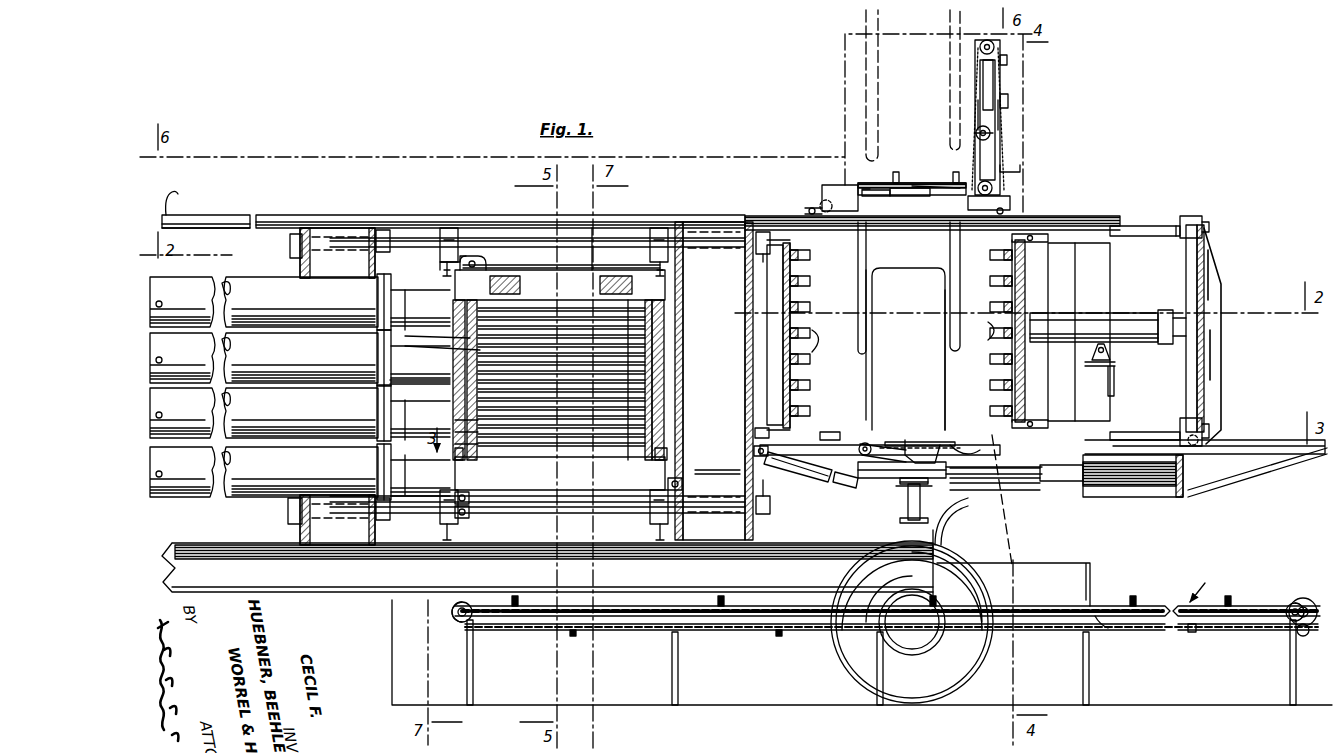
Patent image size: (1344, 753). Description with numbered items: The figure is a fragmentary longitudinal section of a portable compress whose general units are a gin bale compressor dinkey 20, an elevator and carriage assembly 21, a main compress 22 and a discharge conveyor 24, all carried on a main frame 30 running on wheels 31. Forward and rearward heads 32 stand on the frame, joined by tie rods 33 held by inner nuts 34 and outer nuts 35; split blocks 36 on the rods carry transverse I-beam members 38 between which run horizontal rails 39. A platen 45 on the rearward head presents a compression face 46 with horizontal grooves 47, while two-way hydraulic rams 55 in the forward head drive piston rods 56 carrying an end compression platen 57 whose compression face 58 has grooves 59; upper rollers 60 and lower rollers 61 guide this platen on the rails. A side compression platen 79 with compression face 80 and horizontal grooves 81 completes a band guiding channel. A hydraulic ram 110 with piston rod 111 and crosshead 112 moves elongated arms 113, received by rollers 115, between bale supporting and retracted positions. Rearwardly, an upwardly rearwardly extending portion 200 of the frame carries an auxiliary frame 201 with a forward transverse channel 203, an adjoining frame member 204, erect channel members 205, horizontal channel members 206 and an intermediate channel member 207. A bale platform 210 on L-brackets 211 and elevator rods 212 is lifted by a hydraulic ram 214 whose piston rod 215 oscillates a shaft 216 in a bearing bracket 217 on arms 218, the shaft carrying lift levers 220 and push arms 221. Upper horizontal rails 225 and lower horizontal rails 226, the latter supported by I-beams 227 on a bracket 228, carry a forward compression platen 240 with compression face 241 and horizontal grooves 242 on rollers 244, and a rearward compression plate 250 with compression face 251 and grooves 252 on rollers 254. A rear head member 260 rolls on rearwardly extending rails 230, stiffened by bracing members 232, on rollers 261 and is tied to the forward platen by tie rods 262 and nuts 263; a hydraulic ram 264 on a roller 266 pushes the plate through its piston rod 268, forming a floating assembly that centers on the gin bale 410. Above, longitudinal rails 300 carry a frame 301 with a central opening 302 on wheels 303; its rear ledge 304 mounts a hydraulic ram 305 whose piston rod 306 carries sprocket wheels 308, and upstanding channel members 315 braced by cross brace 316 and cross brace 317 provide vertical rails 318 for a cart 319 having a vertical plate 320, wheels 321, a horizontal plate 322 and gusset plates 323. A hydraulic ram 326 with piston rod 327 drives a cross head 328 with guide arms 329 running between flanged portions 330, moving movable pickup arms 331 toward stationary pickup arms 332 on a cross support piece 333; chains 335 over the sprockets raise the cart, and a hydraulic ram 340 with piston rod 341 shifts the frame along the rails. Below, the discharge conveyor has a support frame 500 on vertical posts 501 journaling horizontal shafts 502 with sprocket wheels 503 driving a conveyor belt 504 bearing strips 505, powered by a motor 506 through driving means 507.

The gin bale compressor dinkey 20 is at (1063, 212).
The elevator and carriage assembly 21 is at (1025, 90).
The main compress 22 is at (688, 182).
The discharge conveyor 24 is at (1216, 573).
The main frame 30 is at (322, 570).
The wheels 31 is at (932, 668).
The heads 32 is at (343, 256).
The tie rods 33 is at (412, 238).
The inner nuts 34 is at (383, 232).
The outer nuts 35 is at (295, 236).
The split blocks 36 is at (446, 230).
The I-beam members 38 is at (444, 269).
The horizontal rails 39 is at (542, 275).
The platen 45 is at (662, 350).
The compression face 46 is at (632, 320).
The horizontal grooves 47 is at (652, 384).
The two-way hydraulic rams 55 is at (300, 387).
The piston rods 56 is at (410, 300).
The end compression platen 57 is at (447, 380).
The compression face 58 is at (480, 306).
The horizontal grooves 59 is at (475, 444).
The upper rollers 60 is at (462, 262).
The lower rollers 61 is at (470, 506).
The side compression platen 79 is at (580, 298).
The compression face 80 is at (470, 333).
The horizontal grooves 81 is at (480, 356).
The hydraulic ram 110 is at (920, 463).
The piston rod 111 is at (1045, 495).
The crosshead 112 is at (1080, 472).
The elongated arms 113 is at (720, 470).
The rollers 115 is at (680, 487).
The upwardly rearwardly extending portion 200 is at (940, 547).
The auxiliary frame 201 is at (1160, 492).
The forward transverse channel 203 is at (925, 486).
The plate 204 is at (1190, 478).
The erect channel members 205 is at (1110, 273).
The horizontal channel members 206 is at (1160, 228).
The intermediate channel member 207 is at (1108, 376).
The bale platform 210 is at (930, 442).
The L-brackets 211 is at (960, 445).
The elevator rods 212 is at (940, 506).
The hydraulic ram 214 is at (822, 475).
The piston rod 215 is at (842, 485).
The shaft 216 is at (862, 444).
The bearing bracket 217 is at (845, 440).
The arms 218 is at (862, 480).
The lift levers 220 is at (906, 497).
The push arms 221 is at (925, 445).
The upper horizontal rails 225 is at (908, 338).
The lower horizontal rails 226 is at (1003, 445).
The I-beams 227 is at (755, 416).
The bracket 228 is at (822, 432).
The rearwardly extending rails 230 is at (1255, 446).
The bracing members 232 is at (1270, 470).
The forward compression platen 240 is at (768, 290).
The compression face 241 is at (810, 282).
The horizontal grooves 242 is at (810, 354).
The rollers 244 is at (783, 264).
The rearward compression plate 250 is at (1028, 296).
The compression face 251 is at (990, 277).
The horizontal grooves 252 is at (990, 340).
The rollers 254 is at (1030, 249).
The rear head member 260 is at (1212, 287).
The rollers 261 is at (1205, 437).
The tie rods 262 is at (1178, 228).
The nuts 263 is at (1206, 232).
The hydraulic ram 264 is at (1105, 322).
The roller 266 is at (1106, 346).
The piston rod 268 is at (1178, 306).
The longitudinal rails 300 is at (1108, 216).
The frame 301 is at (818, 205).
The central opening 302 is at (856, 190).
The wheels 303 is at (814, 206).
The rear ledge 304 is at (1000, 189).
The hydraulic ram 305 is at (992, 160).
The piston rod 306 is at (985, 77).
The sprocket wheels 308 is at (996, 46).
The upstanding channel members 315 is at (975, 102).
The cross brace 316 is at (1003, 60).
The cross brace 317 is at (1002, 115).
The vertical rails 318 is at (978, 63).
The cart 319 is at (965, 182).
The vertical plate 320 is at (952, 168).
The wheels 321 is at (1030, 168).
The horizontal plate 322 is at (900, 182).
The gusset plates 323 is at (895, 160).
The hydraulic ram 326 is at (926, 195).
The piston rod 327 is at (885, 185).
The cross head 328 is at (862, 188).
The guide arms 329 is at (864, 232).
The flanged portions 330 is at (955, 232).
The movable pickup arms 331 is at (866, 299).
The stationary pickup arms 332 is at (955, 342).
The cross support piece 333 is at (946, 338).
The chains 335 is at (1003, 100).
The hydraulic ram 340 is at (205, 216).
The piston rod 341 is at (700, 215).
The gin bale 410 is at (897, 346).
The support frame 500 is at (765, 618).
The vertical posts 501 is at (678, 682).
The horizontal shafts 502 is at (450, 617).
The sprocket wheels 503 is at (455, 619).
The conveyor belt 504 is at (1100, 620).
The strips 505 is at (1196, 626).
The motor 506 is at (1303, 598).
The driving means 507 is at (1303, 628).